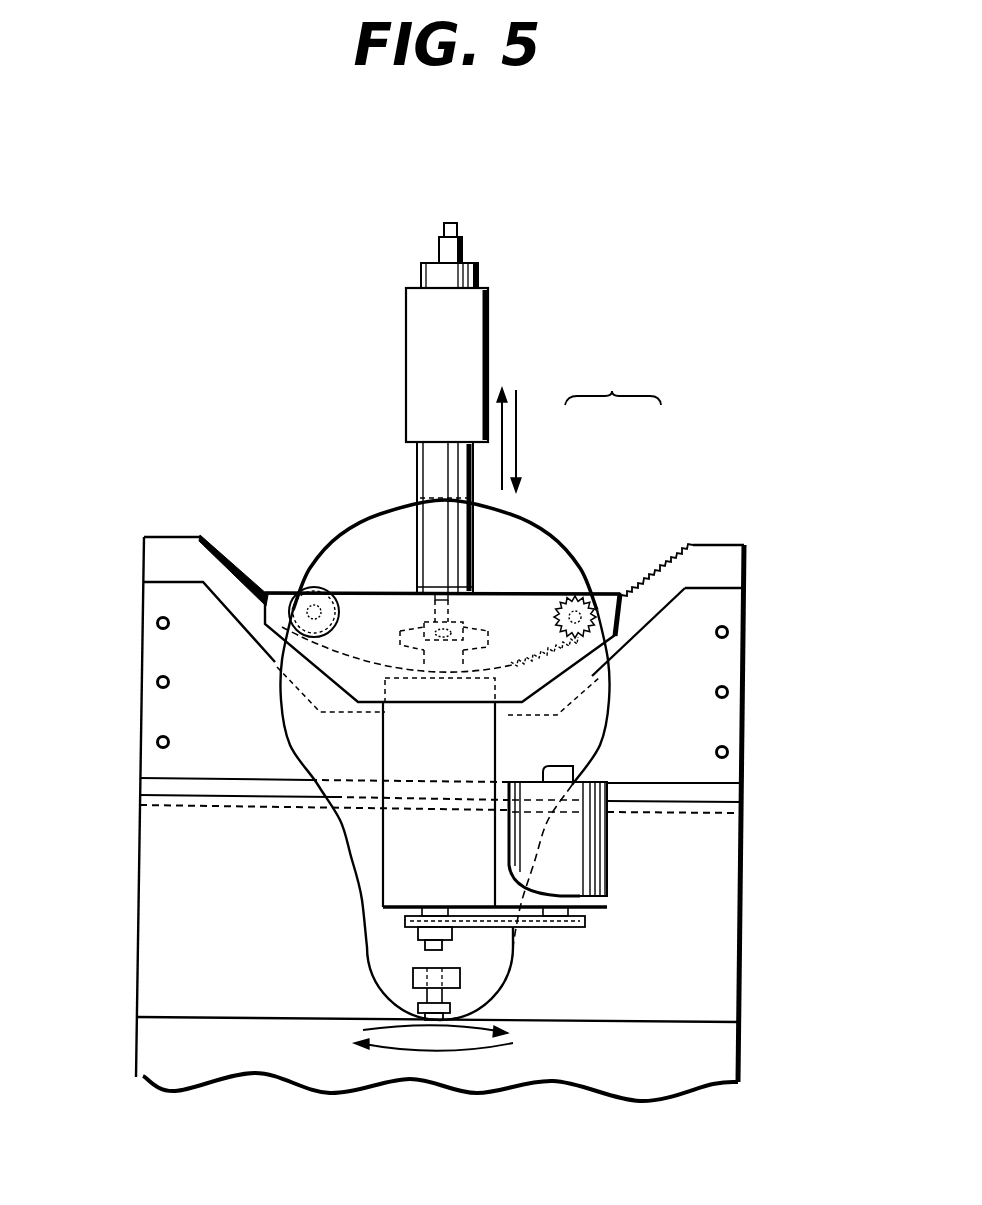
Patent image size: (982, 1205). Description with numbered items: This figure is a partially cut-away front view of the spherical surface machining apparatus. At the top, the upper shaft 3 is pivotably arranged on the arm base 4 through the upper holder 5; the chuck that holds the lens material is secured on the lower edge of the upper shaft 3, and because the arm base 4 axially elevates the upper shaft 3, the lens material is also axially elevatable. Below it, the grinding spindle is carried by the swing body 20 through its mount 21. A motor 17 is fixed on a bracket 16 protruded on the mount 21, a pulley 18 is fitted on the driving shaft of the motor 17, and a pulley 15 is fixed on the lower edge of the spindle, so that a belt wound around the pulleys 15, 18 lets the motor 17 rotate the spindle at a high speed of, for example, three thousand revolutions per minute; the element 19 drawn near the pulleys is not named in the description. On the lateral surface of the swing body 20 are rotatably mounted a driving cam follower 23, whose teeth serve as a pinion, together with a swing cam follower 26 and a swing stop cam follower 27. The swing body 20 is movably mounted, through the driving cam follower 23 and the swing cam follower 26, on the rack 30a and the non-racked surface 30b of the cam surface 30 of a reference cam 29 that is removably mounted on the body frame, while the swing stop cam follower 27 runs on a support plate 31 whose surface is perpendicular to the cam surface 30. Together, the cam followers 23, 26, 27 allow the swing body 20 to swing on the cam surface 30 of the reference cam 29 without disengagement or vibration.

The upper shaft 3 is at (460, 250).
The arm base 4 is at (473, 345).
The upper holder 5 is at (478, 278).
The pulley 15 is at (418, 937).
The bracket 16 is at (610, 903).
The motor 17 is at (583, 848).
The pulley 18 is at (565, 928).
The base 19 is at (490, 928).
The swing body 20 is at (356, 827).
The mount 21 is at (392, 874).
The driving cam follower 23 is at (586, 630).
The swing cam follower 26 is at (313, 605).
The swing stop cam follower 27 is at (418, 982).
The reference cam 29 is at (714, 556).
The cam surface 30 is at (613, 382).
The rack 30a is at (661, 572).
The non-racked surface 30b is at (512, 667).
The support plate 31 is at (733, 663).